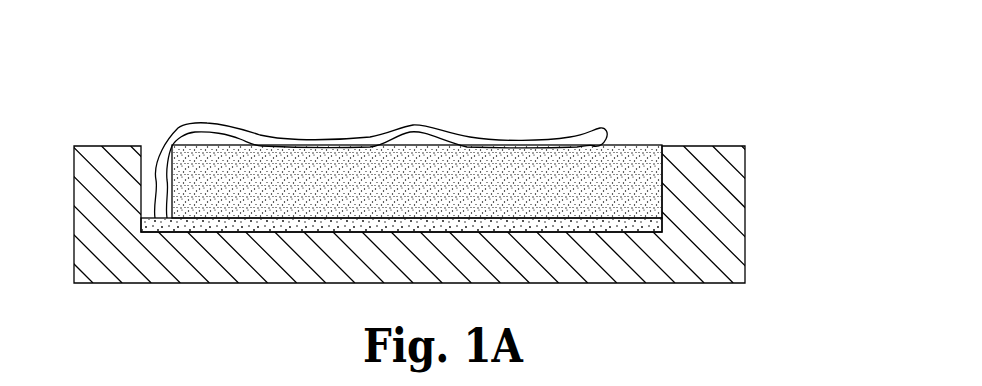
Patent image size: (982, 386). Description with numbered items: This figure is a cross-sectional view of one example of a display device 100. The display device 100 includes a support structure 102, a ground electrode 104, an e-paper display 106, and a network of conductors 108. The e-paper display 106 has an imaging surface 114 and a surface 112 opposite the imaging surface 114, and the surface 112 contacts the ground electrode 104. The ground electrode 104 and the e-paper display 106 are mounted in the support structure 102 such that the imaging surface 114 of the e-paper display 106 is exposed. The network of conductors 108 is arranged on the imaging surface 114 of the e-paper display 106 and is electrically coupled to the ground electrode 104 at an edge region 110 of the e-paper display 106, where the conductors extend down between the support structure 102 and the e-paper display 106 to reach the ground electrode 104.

The display device 100 is at (517, 50).
The support structure 102 is at (735, 220).
The ground electrode 104 is at (625, 233).
The e-paper display 106 is at (397, 197).
The network of conductors 108 is at (417, 122).
The edge region 110 is at (153, 145).
The surface 112 is at (644, 218).
The imaging surface 114 is at (610, 142).